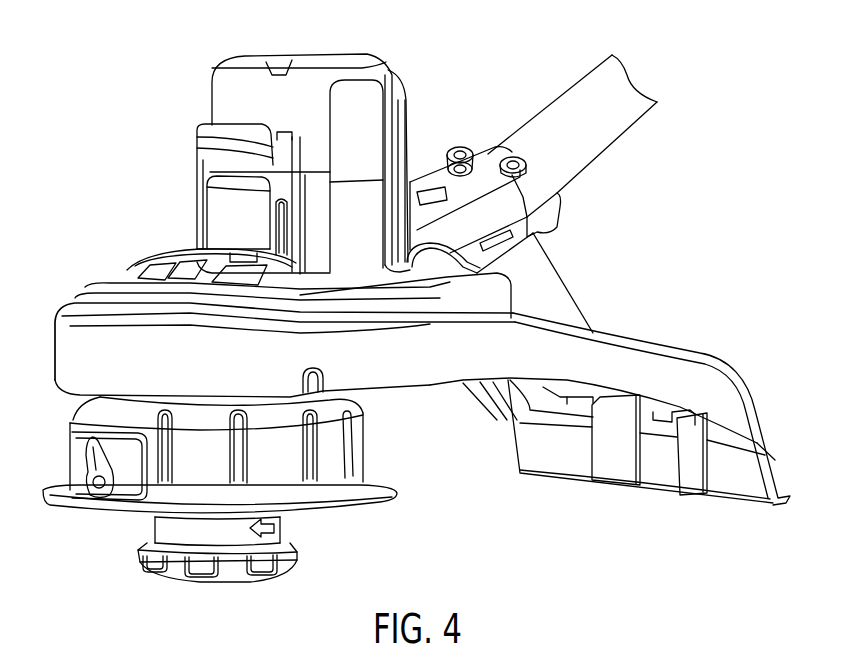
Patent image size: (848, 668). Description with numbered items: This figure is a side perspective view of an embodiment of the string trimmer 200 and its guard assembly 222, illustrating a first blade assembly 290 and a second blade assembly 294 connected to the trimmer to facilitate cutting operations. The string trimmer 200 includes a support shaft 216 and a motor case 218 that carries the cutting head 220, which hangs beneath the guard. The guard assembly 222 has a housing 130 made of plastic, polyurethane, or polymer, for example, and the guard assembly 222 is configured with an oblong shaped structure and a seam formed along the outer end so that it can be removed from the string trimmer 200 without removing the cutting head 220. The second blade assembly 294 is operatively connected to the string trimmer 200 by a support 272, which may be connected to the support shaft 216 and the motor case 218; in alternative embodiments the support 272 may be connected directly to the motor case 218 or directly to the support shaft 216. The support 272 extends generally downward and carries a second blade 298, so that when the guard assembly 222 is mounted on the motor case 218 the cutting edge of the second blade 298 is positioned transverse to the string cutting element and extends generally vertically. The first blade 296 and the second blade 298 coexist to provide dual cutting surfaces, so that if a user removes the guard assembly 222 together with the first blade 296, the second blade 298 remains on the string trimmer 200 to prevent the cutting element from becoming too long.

The string trimmer 200 is at (459, 171).
The support shaft 216 is at (612, 170).
The motor case 218 is at (140, 268).
The cutting head 220 is at (73, 420).
The housing 130 is at (684, 358).
The guard assembly 222 is at (728, 352).
The support 272 is at (558, 300).
The first blade assembly 290 is at (601, 488).
The second blade assembly 294 is at (548, 512).
The first blade 296 is at (688, 488).
The second blade 298 is at (612, 467).